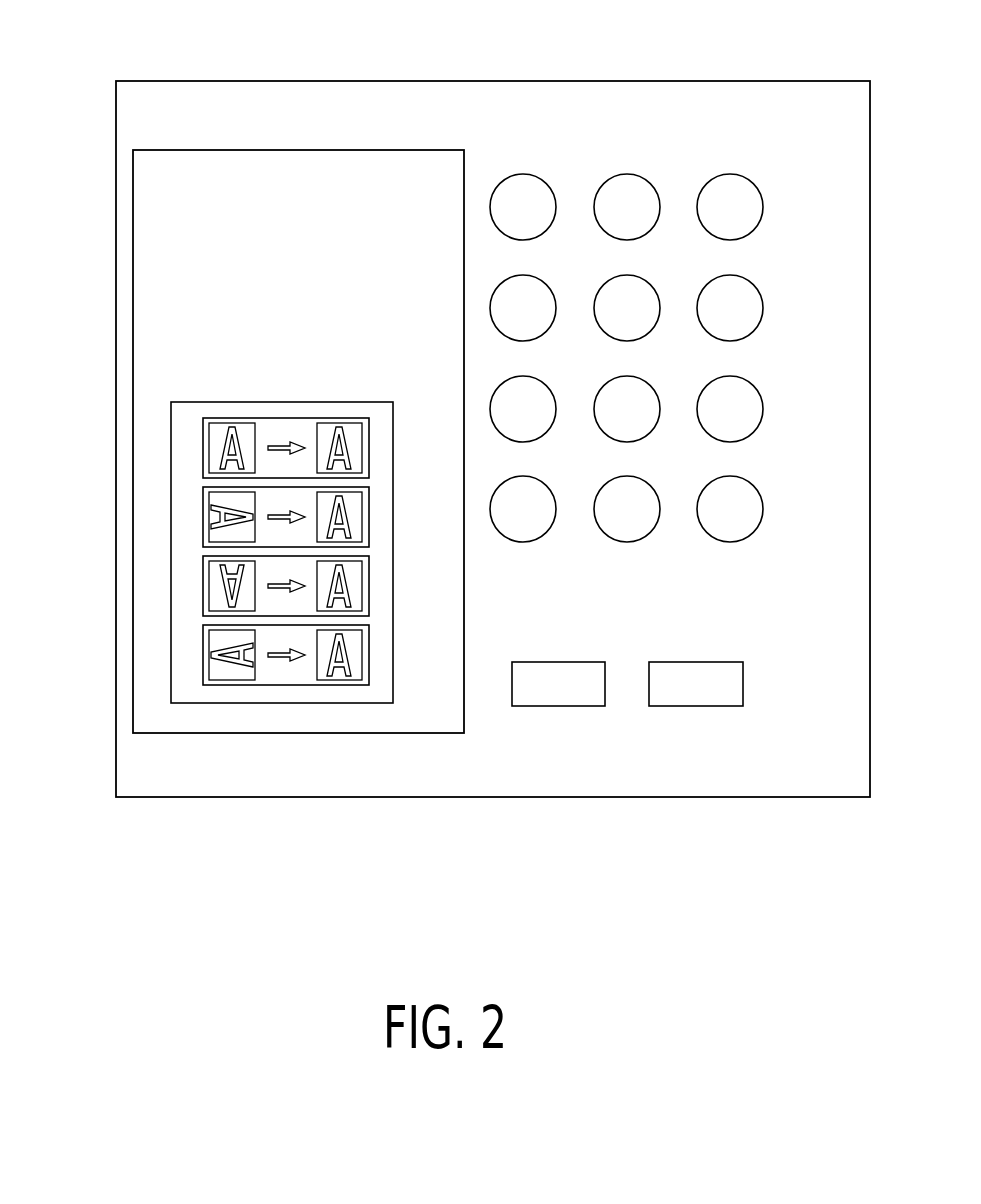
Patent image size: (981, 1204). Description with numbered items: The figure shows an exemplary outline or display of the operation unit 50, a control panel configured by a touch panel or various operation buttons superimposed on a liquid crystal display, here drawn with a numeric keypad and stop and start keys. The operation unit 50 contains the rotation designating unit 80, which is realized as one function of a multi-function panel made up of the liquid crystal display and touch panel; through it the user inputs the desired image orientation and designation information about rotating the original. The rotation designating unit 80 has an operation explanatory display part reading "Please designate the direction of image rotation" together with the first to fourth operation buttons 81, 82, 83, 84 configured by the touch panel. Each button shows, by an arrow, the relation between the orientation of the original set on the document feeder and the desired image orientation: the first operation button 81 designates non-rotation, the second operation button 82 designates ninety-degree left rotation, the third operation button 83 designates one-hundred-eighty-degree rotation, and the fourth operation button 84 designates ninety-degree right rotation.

The operation unit 50 is at (648, 80).
The rotation designating unit 80 is at (282, 148).
The first operation button 81 is at (203, 448).
The second operation button 82 is at (203, 517).
The third operation button 83 is at (203, 586).
The fourth operation button 84 is at (203, 655).